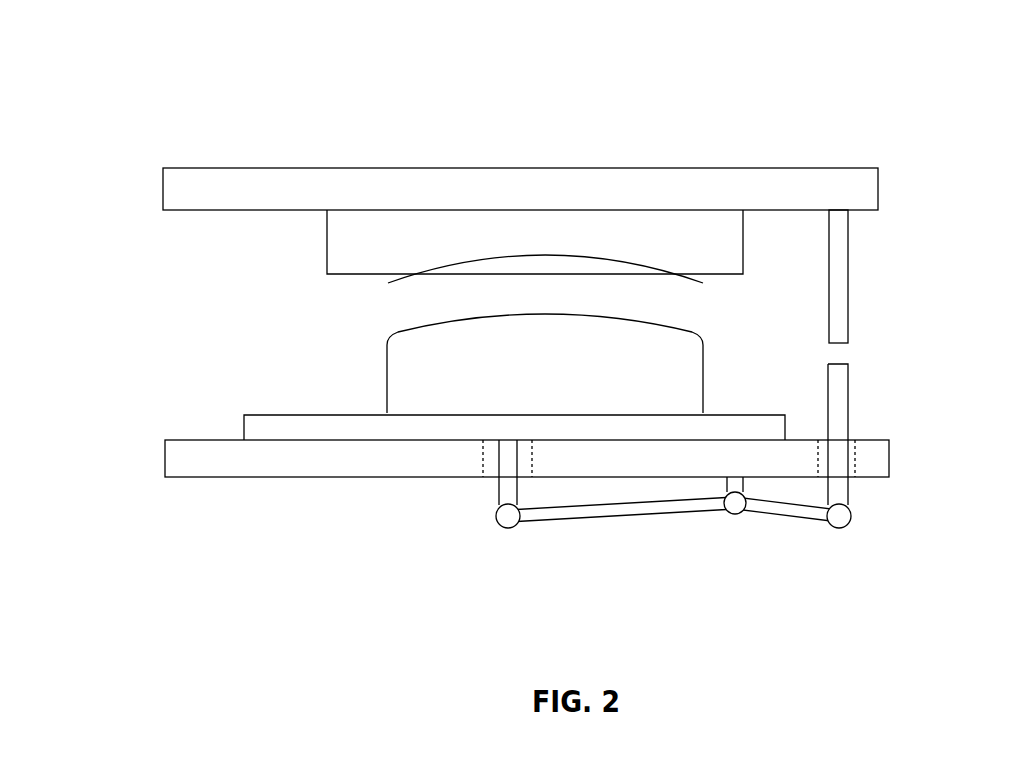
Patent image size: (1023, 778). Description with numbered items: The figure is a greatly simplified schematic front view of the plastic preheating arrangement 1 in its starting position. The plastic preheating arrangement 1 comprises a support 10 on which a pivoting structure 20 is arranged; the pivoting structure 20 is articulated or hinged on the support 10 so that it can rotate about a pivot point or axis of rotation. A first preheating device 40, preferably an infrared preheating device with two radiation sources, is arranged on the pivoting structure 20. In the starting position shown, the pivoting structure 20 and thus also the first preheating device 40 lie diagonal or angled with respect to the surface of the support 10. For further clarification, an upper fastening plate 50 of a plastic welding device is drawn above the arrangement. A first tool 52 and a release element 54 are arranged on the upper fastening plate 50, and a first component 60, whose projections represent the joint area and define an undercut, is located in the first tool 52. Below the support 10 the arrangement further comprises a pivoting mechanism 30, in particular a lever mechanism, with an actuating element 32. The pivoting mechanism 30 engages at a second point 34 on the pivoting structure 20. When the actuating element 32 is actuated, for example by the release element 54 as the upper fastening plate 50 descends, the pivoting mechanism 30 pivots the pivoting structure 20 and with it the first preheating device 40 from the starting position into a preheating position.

The plastic preheating arrangement 1 is at (903, 432).
The support 10 is at (878, 465).
The pivoting structure 20 is at (263, 460).
The pivoting mechanism 30 is at (628, 516).
The actuating element 32 is at (838, 392).
The second point 34 is at (505, 445).
The first preheating device 40 is at (388, 348).
The upper fastening plate 50 is at (543, 183).
The first tool 52 is at (350, 248).
The release element 54 is at (842, 256).
The first component 60 is at (392, 287).